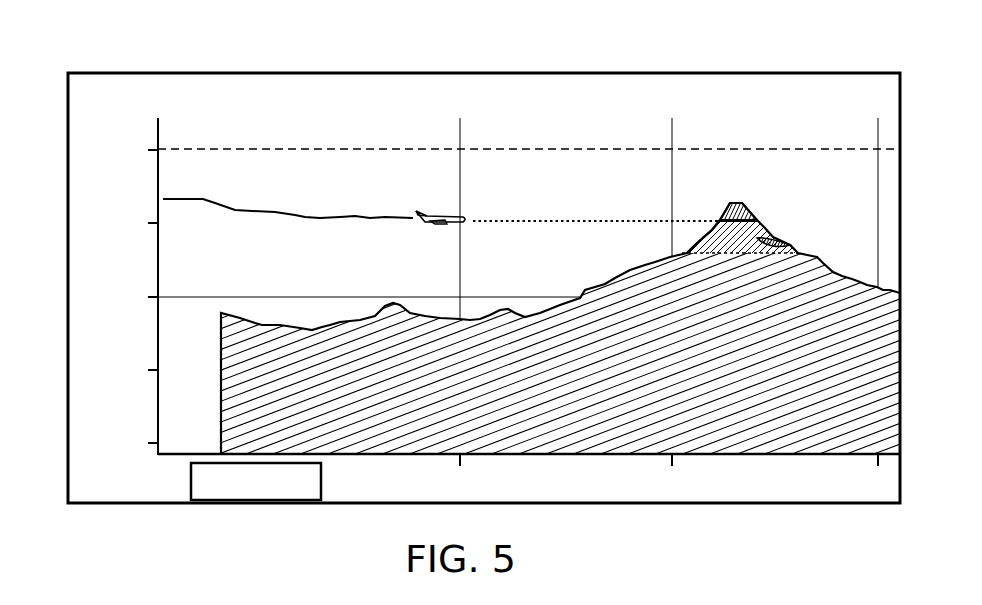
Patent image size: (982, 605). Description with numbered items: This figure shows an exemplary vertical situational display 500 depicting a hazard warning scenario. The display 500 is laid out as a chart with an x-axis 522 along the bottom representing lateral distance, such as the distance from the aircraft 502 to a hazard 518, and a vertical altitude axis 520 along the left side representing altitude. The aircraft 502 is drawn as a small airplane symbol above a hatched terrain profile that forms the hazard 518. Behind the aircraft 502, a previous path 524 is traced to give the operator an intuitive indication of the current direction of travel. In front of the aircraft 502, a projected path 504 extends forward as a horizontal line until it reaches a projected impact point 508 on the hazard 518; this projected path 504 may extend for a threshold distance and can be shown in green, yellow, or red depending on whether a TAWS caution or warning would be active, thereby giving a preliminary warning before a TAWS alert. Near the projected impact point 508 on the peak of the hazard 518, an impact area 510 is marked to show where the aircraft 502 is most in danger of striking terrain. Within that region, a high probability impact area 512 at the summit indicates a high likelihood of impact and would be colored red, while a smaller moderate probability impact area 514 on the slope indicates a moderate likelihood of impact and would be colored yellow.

The vertical situational display 500 is at (152, 43).
The aircraft 502 is at (441, 212).
The projected path 504 is at (565, 219).
The projected impact point 508 is at (718, 216).
The impact area 510 is at (688, 233).
The high probability impact area 512 is at (754, 206).
The moderate probability impact area 514 is at (783, 238).
The hazard 518 is at (731, 176).
The altitude axis 520 is at (60, 301).
The x-axis 522 is at (676, 507).
The previous path 524 is at (275, 211).